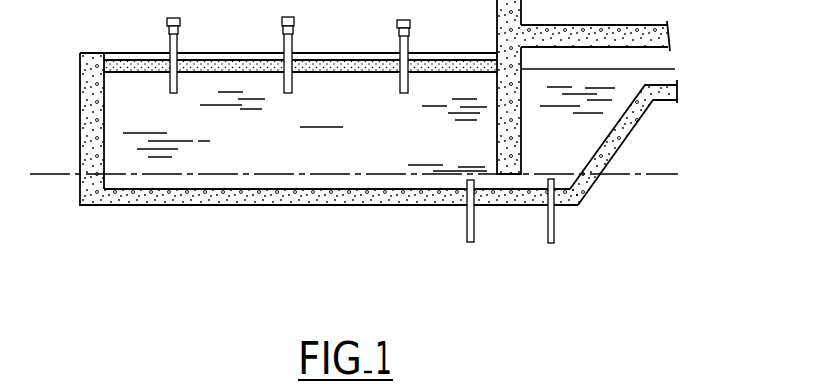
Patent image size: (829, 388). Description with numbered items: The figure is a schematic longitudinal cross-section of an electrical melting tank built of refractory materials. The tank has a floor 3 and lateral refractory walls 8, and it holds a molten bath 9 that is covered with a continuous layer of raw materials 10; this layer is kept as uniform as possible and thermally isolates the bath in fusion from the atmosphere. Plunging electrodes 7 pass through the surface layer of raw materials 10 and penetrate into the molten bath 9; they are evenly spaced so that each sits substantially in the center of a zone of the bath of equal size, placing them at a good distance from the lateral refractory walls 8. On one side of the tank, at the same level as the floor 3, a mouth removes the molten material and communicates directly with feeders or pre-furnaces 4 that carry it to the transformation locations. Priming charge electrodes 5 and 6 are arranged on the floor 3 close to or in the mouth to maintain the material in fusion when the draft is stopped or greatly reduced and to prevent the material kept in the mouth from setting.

The floor 3 is at (330, 205).
The pre-furnaces 4 is at (595, 60).
The priming charge electrode 5 is at (462, 230).
The priming charge electrode 6 is at (547, 232).
The plunging electrodes 7 is at (177, 90).
The lateral refractory wall 8 is at (80, 127).
The molten bath 9 is at (262, 152).
The layer of raw materials 10 is at (232, 58).